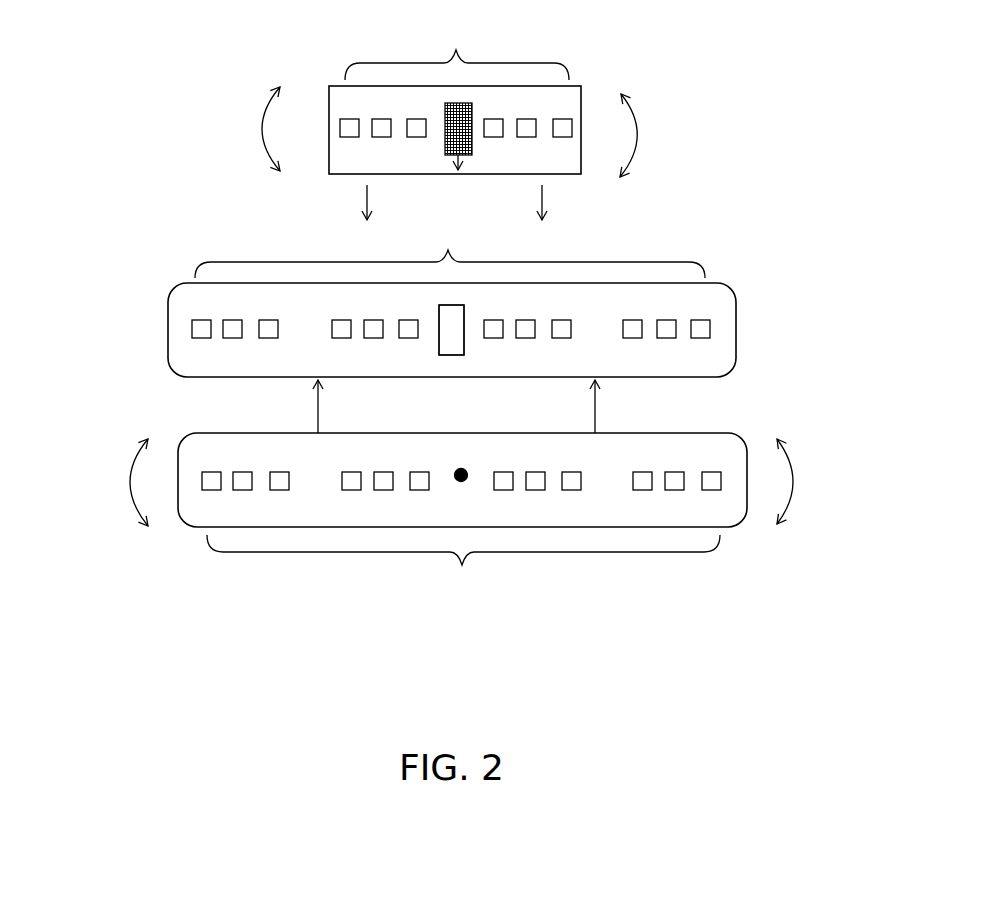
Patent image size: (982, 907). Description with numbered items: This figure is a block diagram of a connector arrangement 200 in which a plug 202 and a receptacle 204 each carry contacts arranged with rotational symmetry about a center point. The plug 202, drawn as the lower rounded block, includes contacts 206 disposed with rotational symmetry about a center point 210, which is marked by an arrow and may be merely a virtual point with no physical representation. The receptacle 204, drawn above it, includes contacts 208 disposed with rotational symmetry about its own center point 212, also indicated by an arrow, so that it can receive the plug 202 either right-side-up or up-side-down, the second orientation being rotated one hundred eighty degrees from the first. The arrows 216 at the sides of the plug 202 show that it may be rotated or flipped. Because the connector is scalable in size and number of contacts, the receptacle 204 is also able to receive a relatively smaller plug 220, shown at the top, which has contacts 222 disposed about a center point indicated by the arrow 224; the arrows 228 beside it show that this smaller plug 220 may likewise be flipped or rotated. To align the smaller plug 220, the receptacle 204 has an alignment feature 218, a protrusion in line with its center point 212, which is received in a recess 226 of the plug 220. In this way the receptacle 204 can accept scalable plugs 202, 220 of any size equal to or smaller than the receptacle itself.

The display system 200 is at (468, 739).
The plug 202 is at (658, 527).
The receptacle 204 is at (737, 308).
The contacts 206 is at (463, 567).
The contacts 208 is at (450, 251).
The center point 210 is at (460, 482).
The center point 212 is at (450, 329).
The arrows 216 is at (133, 478).
The alignment feature 218 is at (448, 326).
The plug 220 is at (513, 87).
The contacts 222 is at (457, 51).
The arrow 224 is at (448, 121).
The recess 226 is at (452, 121).
The arrows 228 is at (262, 125).